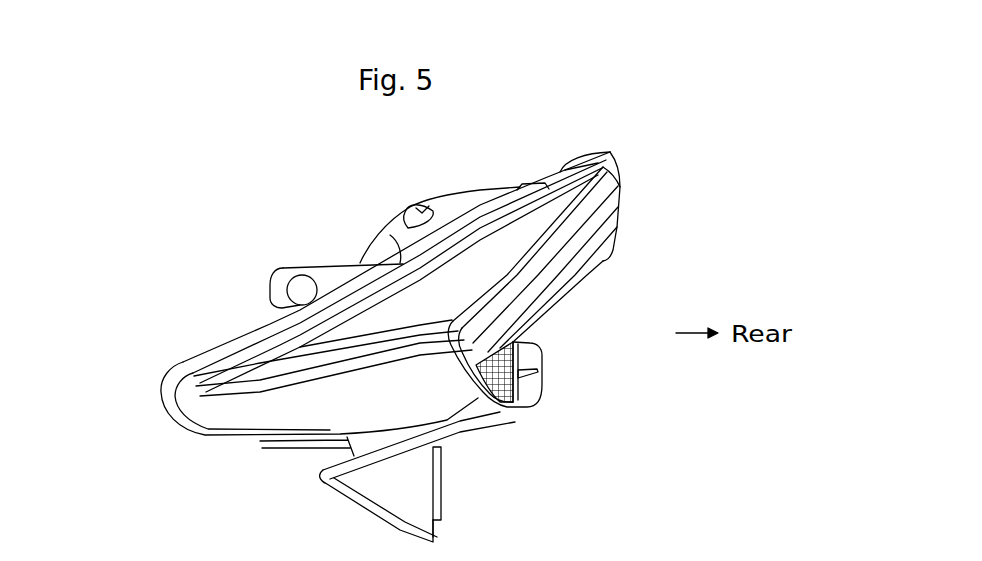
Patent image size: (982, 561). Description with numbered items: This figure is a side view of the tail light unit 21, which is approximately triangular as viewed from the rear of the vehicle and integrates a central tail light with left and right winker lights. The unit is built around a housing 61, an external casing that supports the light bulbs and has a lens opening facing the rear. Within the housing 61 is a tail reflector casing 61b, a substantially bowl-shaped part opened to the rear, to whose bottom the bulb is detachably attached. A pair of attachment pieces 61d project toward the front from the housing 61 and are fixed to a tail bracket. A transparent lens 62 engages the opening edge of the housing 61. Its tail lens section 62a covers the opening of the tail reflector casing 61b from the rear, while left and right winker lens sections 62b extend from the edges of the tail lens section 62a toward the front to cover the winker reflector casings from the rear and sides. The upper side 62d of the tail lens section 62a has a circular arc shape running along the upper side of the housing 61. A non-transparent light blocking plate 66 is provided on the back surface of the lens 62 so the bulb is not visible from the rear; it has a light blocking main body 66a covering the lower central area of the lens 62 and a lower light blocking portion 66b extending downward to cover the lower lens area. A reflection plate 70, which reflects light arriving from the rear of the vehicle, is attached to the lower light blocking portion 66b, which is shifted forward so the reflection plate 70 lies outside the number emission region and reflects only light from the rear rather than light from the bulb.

The tail light unit 21 is at (622, 142).
The housing 61 is at (409, 202).
The tail reflector casing 61b is at (462, 190).
The attachment pieces 61d is at (307, 267).
The lens 62 is at (620, 229).
The tail lens section 62a is at (588, 264).
The winker lens sections 62b is at (450, 397).
The upper side of tail lens section 62d is at (622, 202).
The light blocking plate 66 is at (565, 308).
The light blocking main body 66a is at (542, 322).
The lower light blocking portion 66b is at (440, 531).
The reflection plate 70 is at (441, 508).